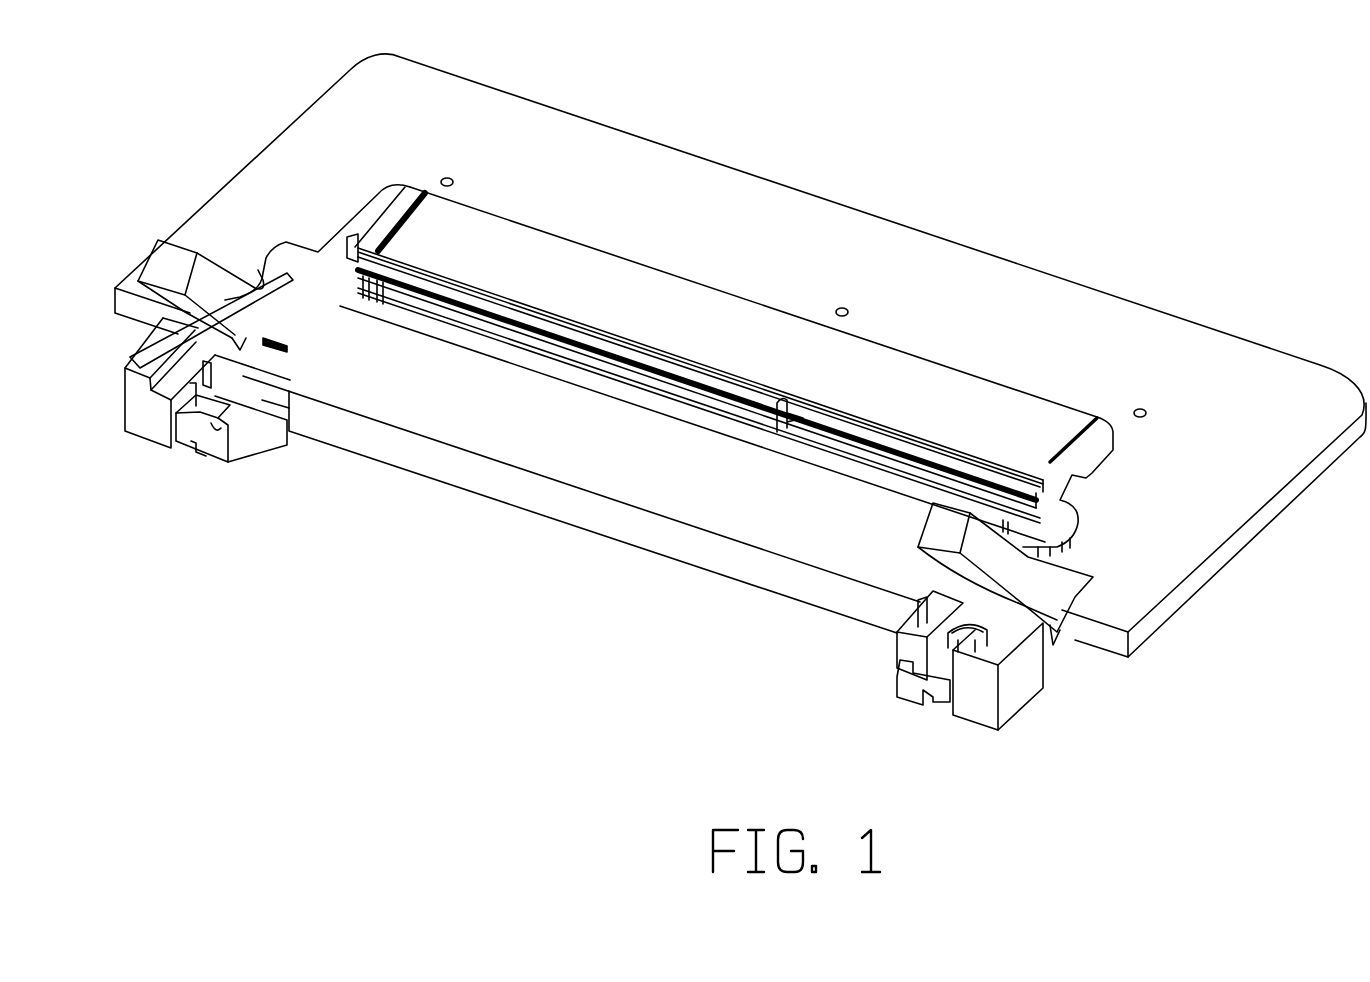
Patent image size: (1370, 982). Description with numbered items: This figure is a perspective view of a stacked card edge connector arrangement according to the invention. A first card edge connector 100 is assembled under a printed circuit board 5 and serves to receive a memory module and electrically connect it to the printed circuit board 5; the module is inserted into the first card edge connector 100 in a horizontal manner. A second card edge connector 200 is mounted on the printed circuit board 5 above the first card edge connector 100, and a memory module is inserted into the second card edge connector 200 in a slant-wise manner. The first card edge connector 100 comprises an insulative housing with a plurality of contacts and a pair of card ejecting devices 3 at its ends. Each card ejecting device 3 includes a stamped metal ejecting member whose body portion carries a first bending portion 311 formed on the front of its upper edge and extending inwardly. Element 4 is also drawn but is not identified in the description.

The printed circuit board 5 is at (685, 193).
The second card edge connector 200 is at (483, 235).
The first card edge connector 100 is at (272, 422).
The printed circuit board 4 is at (467, 468).
The card ejecting device 3 is at (1019, 657).
The first bending portion 311 is at (983, 643).